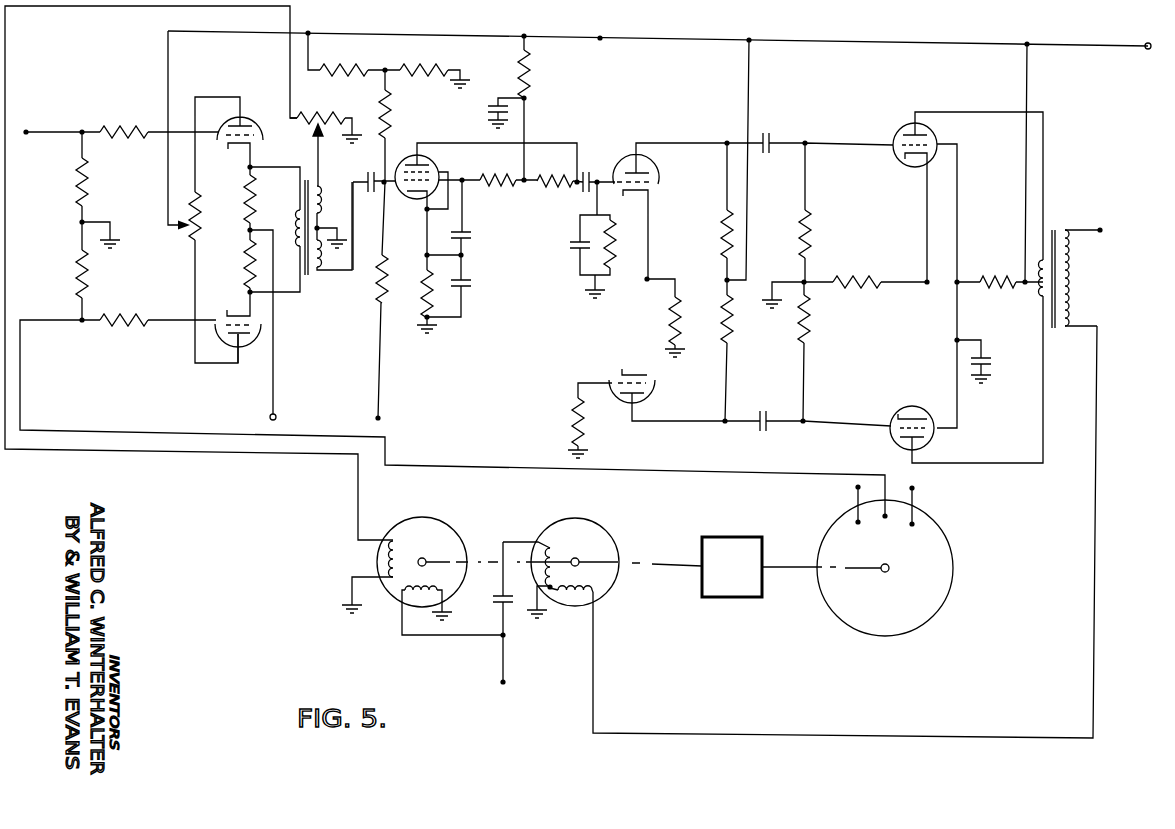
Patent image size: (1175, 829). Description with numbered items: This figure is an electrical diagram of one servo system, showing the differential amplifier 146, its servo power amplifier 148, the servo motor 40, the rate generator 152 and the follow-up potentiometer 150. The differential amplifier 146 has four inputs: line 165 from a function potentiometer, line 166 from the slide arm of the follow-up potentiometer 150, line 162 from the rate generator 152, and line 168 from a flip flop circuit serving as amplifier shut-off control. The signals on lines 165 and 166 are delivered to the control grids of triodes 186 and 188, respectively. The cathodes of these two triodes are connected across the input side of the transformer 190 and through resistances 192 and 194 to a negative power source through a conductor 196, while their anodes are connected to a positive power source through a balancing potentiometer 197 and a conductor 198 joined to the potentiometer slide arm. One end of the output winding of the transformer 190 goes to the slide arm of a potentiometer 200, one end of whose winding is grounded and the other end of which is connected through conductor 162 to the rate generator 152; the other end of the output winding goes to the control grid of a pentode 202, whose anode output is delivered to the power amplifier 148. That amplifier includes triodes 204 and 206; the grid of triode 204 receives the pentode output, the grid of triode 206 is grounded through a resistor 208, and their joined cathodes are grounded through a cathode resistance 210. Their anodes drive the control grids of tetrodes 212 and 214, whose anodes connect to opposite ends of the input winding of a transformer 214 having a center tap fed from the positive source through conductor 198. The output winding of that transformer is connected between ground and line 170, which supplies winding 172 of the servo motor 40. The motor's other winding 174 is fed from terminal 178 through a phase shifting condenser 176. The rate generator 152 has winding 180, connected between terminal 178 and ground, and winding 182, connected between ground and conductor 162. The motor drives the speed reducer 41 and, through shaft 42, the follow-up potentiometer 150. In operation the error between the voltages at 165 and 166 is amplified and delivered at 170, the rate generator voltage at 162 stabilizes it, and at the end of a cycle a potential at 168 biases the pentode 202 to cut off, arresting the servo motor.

The line from rate generator 162 is at (110, 8).
The differential amplifier 146 is at (108, 74).
The line from function potentiometer 165 is at (27, 136).
The line from follow-up potentiometer 166 is at (38, 319).
The triode 186 is at (263, 122).
The balancing potentiometer 197 is at (192, 238).
The conductor 198 is at (166, 188).
The resistance 192 is at (246, 209).
The resistance 194 is at (247, 274).
The conductor 196 is at (275, 382).
The triode 188 is at (259, 333).
The potentiometer 200 is at (310, 117).
The transformer 190 is at (310, 285).
The servo power amplifier 148 is at (954, 33).
The line from flip flop circuit 168 is at (381, 418).
The pentode 202 is at (417, 199).
The triode 204 is at (625, 163).
The triode 206 is at (653, 386).
The resistor 208 is at (573, 425).
The cathode resistance 210 is at (683, 326).
The tetrode 212 is at (905, 123).
The tetrode / output transformer 214 is at (1062, 219).
The line 170 is at (1097, 368).
The follow-up potentiometer 150 is at (949, 544).
The shaft 42 is at (789, 566).
The speed reducer 41 is at (728, 537).
The servo motor 40 is at (618, 546).
The winding 174 is at (552, 547).
The winding 172 is at (597, 589).
The rate generator 152 is at (454, 531).
The winding 182 is at (401, 539).
The winding 180 is at (455, 585).
The phase shifting condenser 176 is at (501, 601).
The terminal 178 is at (506, 682).